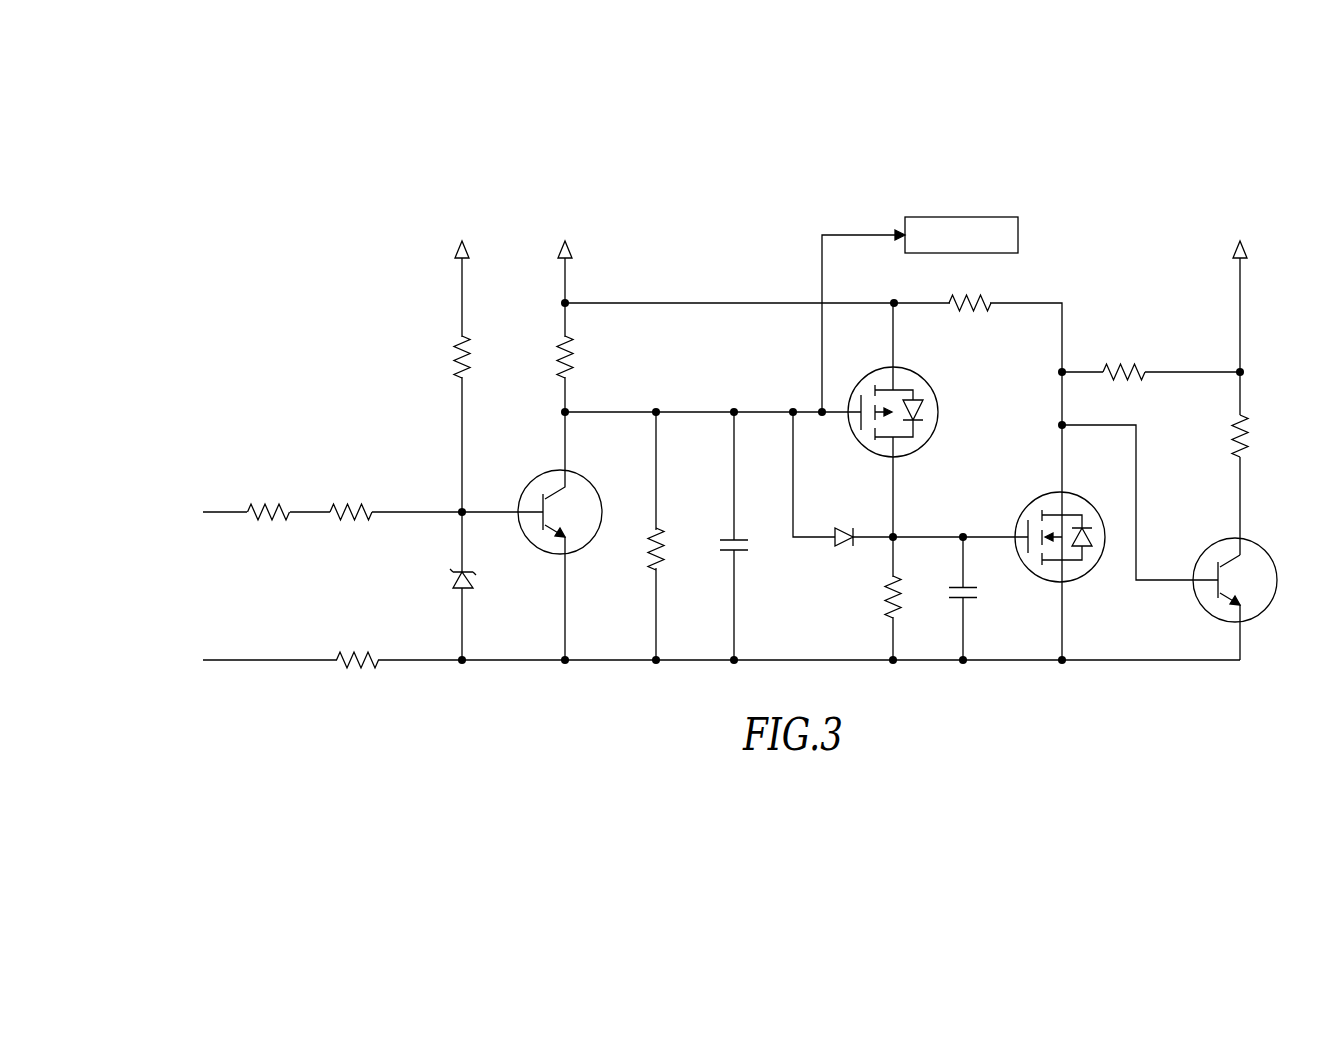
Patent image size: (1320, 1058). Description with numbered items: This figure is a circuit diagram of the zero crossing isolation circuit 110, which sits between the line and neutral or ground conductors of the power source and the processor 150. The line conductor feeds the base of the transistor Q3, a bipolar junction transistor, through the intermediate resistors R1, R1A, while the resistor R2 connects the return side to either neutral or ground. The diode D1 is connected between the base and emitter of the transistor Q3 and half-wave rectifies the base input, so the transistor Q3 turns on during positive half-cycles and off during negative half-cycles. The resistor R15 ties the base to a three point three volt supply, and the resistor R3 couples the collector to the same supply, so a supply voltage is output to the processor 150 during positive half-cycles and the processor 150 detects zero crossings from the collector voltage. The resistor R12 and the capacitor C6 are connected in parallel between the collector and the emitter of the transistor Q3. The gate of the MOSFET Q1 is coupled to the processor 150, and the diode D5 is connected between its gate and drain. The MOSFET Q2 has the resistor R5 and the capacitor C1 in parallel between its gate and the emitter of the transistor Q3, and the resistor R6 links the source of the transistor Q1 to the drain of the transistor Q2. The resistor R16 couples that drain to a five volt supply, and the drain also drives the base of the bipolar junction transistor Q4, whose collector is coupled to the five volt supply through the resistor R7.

The zero crossing isolation circuit 110 is at (253, 303).
The processor 150 is at (958, 216).
The resistor R1 is at (269, 491).
The resistor R1A is at (351, 491).
The resistor R2 is at (358, 641).
The resistor R3 is at (580, 357).
The resistor R5 is at (879, 597).
The resistor R6 is at (970, 323).
The resistor R7 is at (1256, 436).
The resistor R12 is at (675, 549).
The resistor R15 is at (482, 357).
The resistor R16 is at (1125, 353).
The capacitor C1 is at (977, 595).
The capacitor C6 is at (747, 552).
The diode D1 is at (476, 582).
The diode D5 is at (846, 517).
The transistor Q1 is at (905, 412).
The transistor Q2 is at (1062, 525).
The transistor Q3 is at (567, 559).
The transistor Q4 is at (1244, 597).